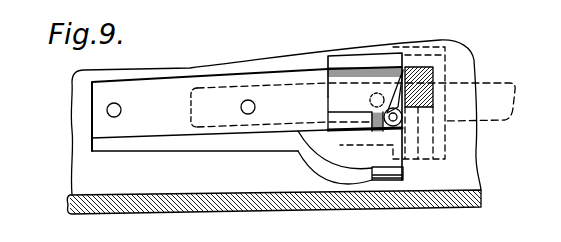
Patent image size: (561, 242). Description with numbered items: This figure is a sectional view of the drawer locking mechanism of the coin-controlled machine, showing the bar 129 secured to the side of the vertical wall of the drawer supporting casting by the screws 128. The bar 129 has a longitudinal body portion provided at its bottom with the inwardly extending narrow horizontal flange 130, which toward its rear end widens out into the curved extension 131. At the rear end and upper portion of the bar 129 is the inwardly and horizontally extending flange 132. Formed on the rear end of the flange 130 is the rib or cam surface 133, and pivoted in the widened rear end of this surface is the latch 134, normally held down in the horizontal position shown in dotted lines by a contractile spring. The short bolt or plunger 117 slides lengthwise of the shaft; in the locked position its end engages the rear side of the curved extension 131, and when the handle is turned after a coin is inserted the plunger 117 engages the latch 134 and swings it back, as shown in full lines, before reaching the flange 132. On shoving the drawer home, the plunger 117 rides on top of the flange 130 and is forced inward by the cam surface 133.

The short bolt 117 is at (430, 73).
The screws 128 is at (111, 111).
The bar 129 is at (161, 102).
The horizontal flange 130 is at (157, 139).
The curved extension 131 is at (355, 156).
The flange 132 is at (352, 59).
The cam surface 133 is at (315, 140).
The latch 134 is at (392, 105).